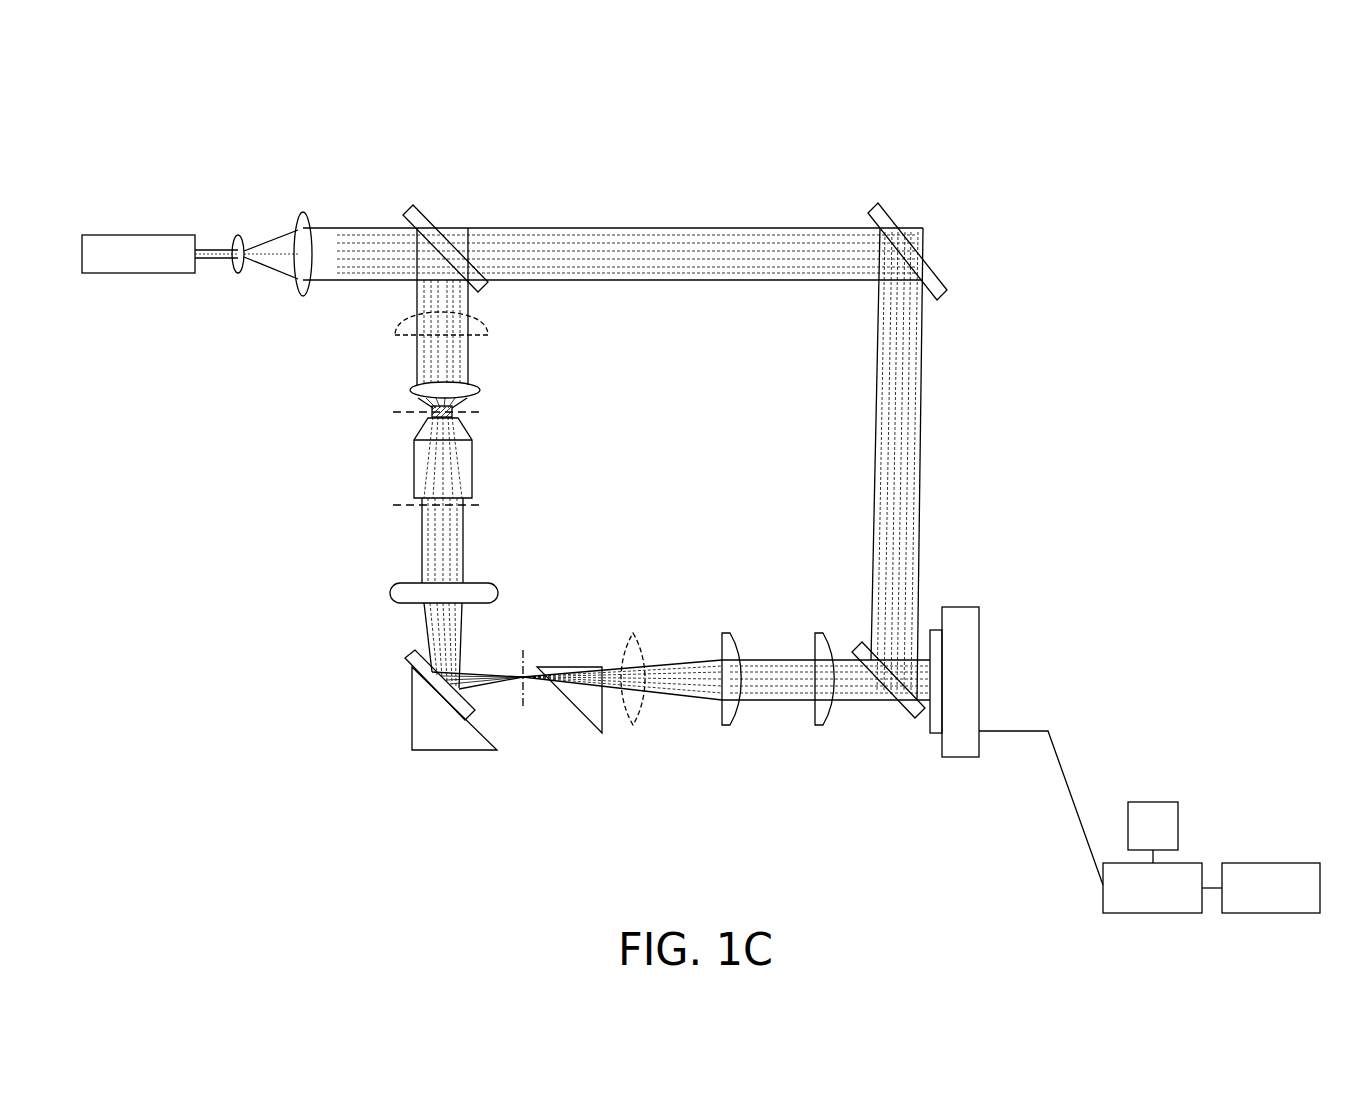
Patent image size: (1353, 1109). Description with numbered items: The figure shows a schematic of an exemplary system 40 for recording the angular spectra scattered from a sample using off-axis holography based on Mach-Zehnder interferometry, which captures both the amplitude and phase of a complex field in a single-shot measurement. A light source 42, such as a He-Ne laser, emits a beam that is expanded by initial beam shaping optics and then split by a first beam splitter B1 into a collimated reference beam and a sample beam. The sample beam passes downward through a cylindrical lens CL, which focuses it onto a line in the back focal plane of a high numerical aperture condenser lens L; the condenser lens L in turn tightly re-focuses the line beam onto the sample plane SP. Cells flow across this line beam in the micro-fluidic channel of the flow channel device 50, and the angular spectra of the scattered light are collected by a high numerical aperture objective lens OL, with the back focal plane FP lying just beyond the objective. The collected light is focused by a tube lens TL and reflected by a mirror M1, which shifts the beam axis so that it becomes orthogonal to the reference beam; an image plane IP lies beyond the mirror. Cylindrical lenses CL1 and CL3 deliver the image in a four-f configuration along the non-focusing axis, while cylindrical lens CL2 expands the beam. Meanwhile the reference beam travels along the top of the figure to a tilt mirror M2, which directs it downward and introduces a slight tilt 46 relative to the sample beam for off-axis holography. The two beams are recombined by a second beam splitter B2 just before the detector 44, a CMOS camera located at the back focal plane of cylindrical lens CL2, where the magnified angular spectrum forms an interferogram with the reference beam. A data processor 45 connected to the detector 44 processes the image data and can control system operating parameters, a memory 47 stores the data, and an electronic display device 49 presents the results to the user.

The system 40 is at (628, 141).
The light source 42 is at (132, 233).
The detector 44 is at (962, 759).
The data processor 45 is at (1152, 915).
The tilt 46 is at (977, 287).
The memory 47 is at (1270, 915).
The electronic display device 49 is at (1153, 800).
The flow channel device 50 is at (385, 418).
The first beam splitter B1 is at (363, 228).
The second beam splitter B2 is at (902, 703).
The mirror M1 is at (451, 700).
The tilt mirror M2 is at (897, 223).
The cylindrical lens CL is at (397, 327).
The condenser lens L is at (410, 390).
The sample plane SP is at (473, 415).
The objective lens OL is at (413, 456).
The back focal plane FP is at (472, 504).
The tube lens TL is at (390, 593).
The image plane IP is at (527, 702).
The cylindrical lens CL1 is at (633, 727).
The cylindrical lens CL2 is at (729, 727).
The cylindrical lens CL3 is at (823, 727).